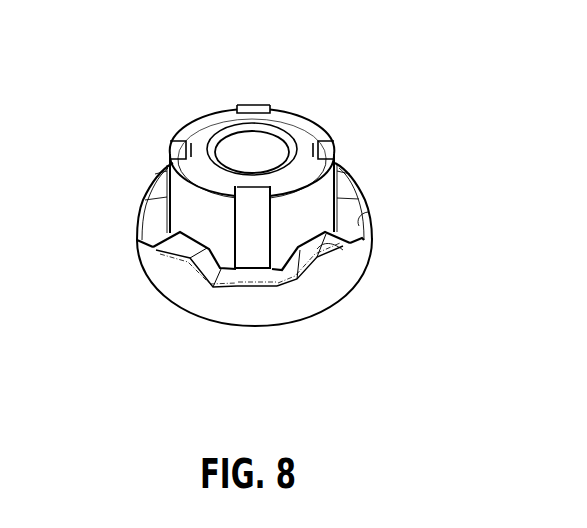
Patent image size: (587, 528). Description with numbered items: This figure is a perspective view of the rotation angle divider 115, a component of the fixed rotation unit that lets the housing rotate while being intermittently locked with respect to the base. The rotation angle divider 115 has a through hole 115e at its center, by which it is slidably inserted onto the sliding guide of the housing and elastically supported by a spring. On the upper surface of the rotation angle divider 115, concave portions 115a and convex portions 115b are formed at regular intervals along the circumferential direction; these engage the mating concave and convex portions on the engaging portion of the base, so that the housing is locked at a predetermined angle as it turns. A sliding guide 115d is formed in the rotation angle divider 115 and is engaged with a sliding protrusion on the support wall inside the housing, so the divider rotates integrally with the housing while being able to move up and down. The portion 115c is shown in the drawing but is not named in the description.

The rotation angle divider 115 is at (135, 257).
The concave portion 115a is at (340, 246).
The convex portion 115b is at (367, 211).
The cylindrical body 115c is at (212, 116).
The sliding guide 115d is at (253, 259).
The through hole 115e is at (268, 144).